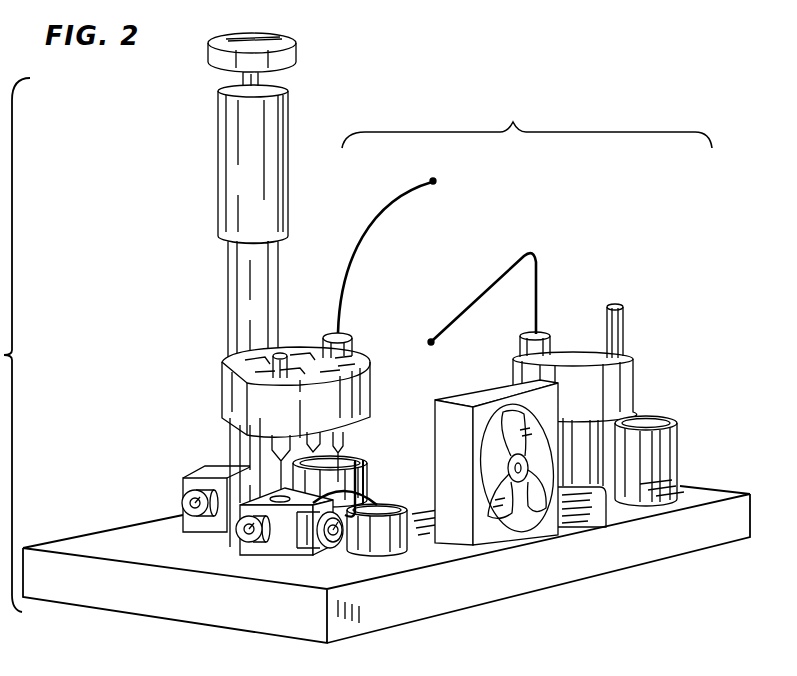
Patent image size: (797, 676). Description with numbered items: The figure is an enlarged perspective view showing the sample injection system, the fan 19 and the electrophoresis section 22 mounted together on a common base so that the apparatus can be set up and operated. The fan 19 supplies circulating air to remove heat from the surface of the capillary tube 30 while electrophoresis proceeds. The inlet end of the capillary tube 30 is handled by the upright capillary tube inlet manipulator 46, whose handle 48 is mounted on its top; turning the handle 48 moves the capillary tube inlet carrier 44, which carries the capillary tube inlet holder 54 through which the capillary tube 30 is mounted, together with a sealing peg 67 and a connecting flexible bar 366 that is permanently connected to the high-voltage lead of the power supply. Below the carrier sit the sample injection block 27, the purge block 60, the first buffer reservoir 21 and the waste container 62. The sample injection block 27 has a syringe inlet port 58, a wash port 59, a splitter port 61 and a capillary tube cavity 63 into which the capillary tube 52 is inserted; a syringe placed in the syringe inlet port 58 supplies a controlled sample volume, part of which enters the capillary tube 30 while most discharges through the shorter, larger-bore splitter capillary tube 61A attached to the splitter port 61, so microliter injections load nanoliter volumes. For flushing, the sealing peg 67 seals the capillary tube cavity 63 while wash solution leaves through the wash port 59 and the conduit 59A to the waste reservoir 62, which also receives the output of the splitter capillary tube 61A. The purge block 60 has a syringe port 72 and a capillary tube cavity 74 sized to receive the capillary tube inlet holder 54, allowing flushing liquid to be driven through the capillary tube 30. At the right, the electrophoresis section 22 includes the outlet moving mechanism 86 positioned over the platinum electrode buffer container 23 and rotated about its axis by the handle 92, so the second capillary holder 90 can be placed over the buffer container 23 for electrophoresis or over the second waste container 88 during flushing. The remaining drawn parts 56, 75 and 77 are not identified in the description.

The fan 19 is at (496, 537).
The first buffer reservoir 21 is at (352, 458).
The electrophoresis section 22 is at (527, 127).
The platinum electrode buffer container 23 is at (583, 478).
The sample injection block 27 is at (240, 550).
The capillary tube 30 is at (536, 262).
The capillary tube inlet carrier 44 is at (225, 388).
The capillary tube inlet manipulator 46 is at (206, 170).
The handle 48 is at (296, 44).
The capillary tube 52 is at (364, 467).
The capillary tube inlet holder 54 is at (352, 342).
The post 56 is at (287, 352).
The syringe inlet port 58 is at (236, 535).
The wash port 59 is at (320, 550).
The conduit 59A is at (328, 556).
The purge block 60 is at (195, 477).
The splitter port 61 is at (368, 489).
The splitter capillary tube 61A is at (378, 504).
The waste container 62 is at (380, 547).
The capillary tube cavity 63 is at (283, 556).
The sealing peg 67 is at (272, 446).
The syringe port 72 is at (184, 504).
The capillary tube cavity 74 is at (225, 478).
The tube 75 is at (432, 181).
The tube end 77 is at (428, 343).
The outlet moving mechanism 86 is at (634, 380).
The second waste container 88 is at (678, 445).
The second capillary holder 90 is at (548, 340).
The handle 92 is at (623, 312).
The connecting flexible bar 366 is at (313, 436).